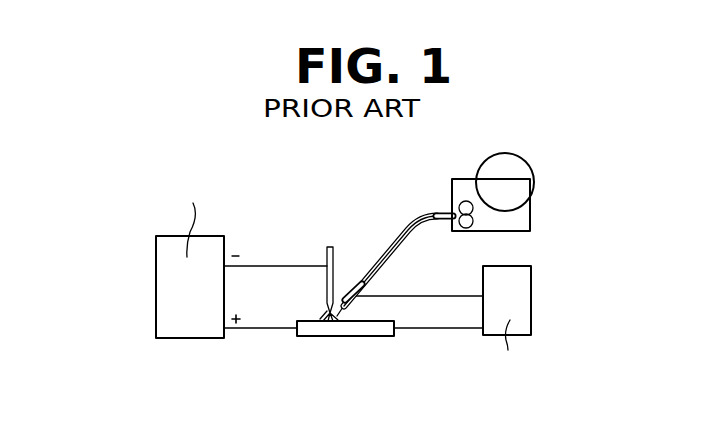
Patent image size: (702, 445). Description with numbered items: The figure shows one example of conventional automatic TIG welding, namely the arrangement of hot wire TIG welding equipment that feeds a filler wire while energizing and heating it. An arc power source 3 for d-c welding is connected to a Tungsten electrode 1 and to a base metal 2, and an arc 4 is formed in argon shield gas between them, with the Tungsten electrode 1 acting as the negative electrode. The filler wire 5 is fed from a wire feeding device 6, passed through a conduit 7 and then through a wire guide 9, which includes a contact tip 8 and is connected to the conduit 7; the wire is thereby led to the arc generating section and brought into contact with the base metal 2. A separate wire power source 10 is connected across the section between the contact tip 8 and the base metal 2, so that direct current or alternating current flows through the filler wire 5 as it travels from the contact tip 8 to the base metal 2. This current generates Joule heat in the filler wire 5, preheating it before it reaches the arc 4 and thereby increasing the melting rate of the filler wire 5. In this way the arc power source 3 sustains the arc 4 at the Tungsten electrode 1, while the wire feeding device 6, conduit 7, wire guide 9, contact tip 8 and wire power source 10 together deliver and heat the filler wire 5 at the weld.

The Tungsten electrode 1 is at (328, 246).
The base metal 2 is at (353, 337).
The arc power source 3 is at (156, 301).
The arc 4 is at (325, 318).
The filler wire 5 is at (338, 314).
The wire feeding device 6 is at (530, 213).
The conduit 7 is at (405, 238).
The contact tip 8 is at (345, 290).
The wire guide 9 is at (390, 244).
The wire power source 10 is at (531, 297).